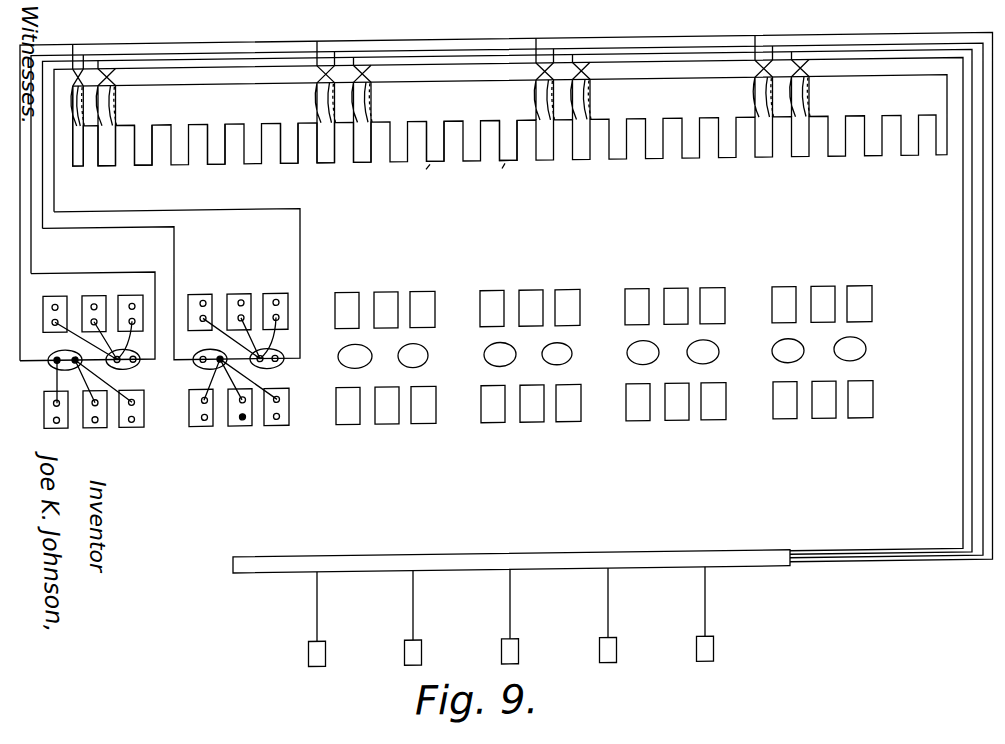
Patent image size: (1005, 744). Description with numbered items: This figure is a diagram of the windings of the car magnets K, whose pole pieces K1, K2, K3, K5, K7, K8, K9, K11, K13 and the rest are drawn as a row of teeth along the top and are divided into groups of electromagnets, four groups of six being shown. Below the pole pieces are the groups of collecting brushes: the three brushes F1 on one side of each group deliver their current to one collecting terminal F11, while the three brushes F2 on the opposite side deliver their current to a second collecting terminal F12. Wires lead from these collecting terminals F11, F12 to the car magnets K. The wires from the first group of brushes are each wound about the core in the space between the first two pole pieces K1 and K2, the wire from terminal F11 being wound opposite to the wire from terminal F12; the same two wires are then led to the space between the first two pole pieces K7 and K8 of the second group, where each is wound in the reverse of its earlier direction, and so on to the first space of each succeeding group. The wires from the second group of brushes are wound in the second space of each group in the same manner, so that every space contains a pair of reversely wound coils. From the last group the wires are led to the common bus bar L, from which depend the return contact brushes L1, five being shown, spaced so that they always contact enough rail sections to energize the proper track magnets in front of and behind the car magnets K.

The car magnets K is at (509, 99).
The pole piece K1 is at (78, 160).
The pole piece K2 is at (107, 159).
The pole piece K3 is at (146, 159).
The pole piece K5 is at (218, 157).
The pole piece K7 is at (287, 156).
The pole piece K8 is at (324, 160).
The pole piece K9 is at (360, 157).
The pole piece K11 is at (429, 154).
The pole piece K13 is at (508, 154).
The brushes F1 is at (130, 305).
The collecting terminal F12 is at (50, 367).
The collecting terminal F11 is at (138, 368).
The brushes F2 is at (56, 424).
The bus bar L is at (545, 560).
The return contact brushes L1 is at (333, 645).